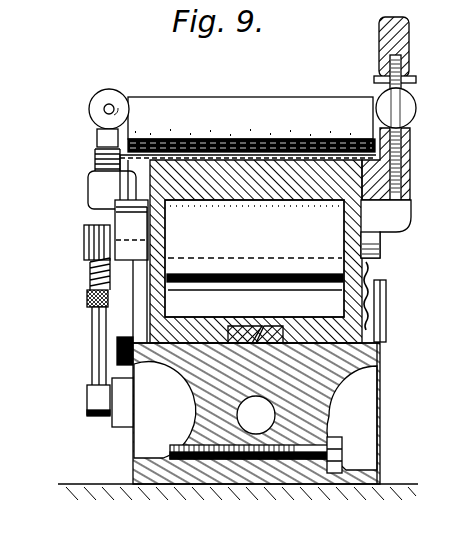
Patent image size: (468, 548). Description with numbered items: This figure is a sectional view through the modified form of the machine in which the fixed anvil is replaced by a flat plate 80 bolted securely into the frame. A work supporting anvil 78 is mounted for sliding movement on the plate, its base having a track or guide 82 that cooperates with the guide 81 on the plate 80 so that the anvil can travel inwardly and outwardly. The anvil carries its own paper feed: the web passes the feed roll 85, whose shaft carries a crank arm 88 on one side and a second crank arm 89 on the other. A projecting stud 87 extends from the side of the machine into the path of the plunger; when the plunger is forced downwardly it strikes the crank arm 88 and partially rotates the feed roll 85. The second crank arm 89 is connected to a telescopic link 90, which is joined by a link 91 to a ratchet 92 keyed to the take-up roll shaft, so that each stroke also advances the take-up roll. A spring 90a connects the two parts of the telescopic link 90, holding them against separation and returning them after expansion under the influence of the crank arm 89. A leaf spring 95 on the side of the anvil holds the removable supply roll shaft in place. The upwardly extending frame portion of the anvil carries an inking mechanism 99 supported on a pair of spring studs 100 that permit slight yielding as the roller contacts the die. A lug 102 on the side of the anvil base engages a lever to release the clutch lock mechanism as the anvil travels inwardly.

The work supporting anvil 78 is at (108, 180).
The flat plate 80 is at (212, 486).
The guide 81 is at (252, 486).
The track or guide 82 is at (284, 484).
The feed roll 85 is at (365, 262).
The projecting stud 87 is at (411, 49).
The crank arm 88 is at (387, 222).
The second crank arm 89 is at (128, 222).
The telescopic link 90 is at (94, 340).
The spring 90a is at (95, 288).
The link 91 is at (118, 418).
The ratchet 92 is at (418, 202).
The leaf spring 95 is at (370, 310).
The inking mechanism 99 is at (264, 107).
The spring studs 100 is at (103, 153).
The lug 102 is at (384, 298).